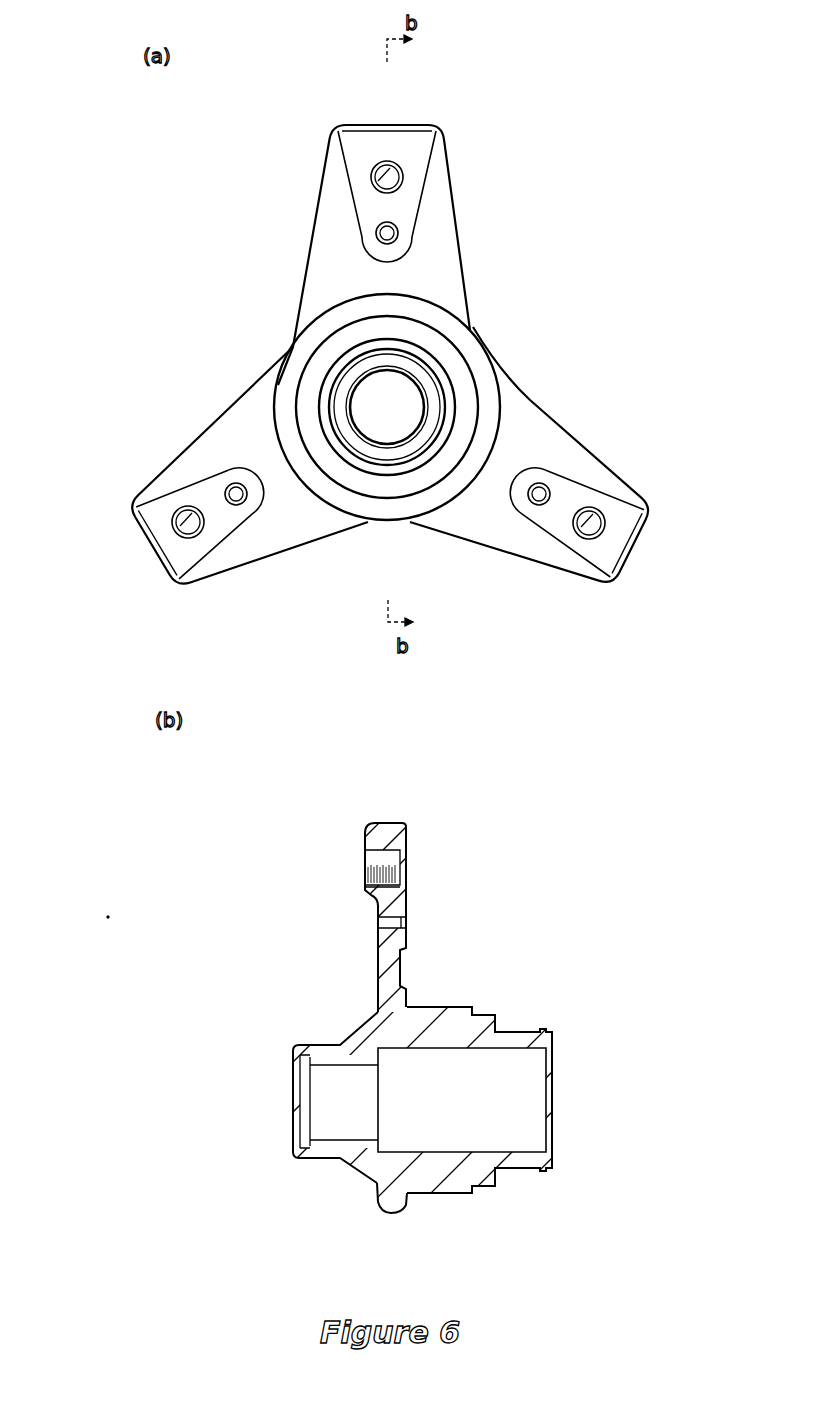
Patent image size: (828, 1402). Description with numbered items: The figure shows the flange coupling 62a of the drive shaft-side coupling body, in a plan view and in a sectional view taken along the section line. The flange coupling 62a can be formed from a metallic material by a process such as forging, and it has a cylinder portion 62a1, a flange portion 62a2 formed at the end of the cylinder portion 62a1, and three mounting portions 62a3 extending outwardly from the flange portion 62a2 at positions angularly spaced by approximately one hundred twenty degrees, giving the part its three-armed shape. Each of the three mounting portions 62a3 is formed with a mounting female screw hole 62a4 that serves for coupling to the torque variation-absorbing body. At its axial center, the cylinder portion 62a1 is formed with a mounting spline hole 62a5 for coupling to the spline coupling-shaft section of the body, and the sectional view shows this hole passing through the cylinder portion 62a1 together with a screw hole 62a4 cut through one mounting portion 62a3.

The flange coupling 62a is at (457, 141).
The cylinder portion 62a1 is at (392, 452).
The flange portion 62a2 is at (425, 507).
The mounting portion 62a3 is at (430, 202).
The mounting female screw hole 62a4 is at (372, 173).
The mounting spline hole 62a5 is at (385, 378).